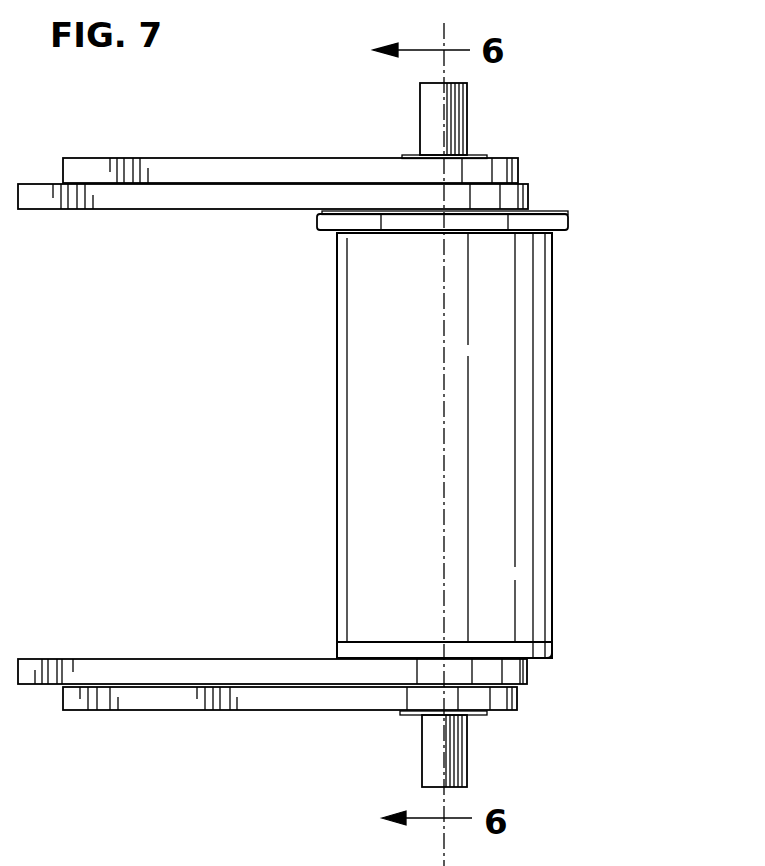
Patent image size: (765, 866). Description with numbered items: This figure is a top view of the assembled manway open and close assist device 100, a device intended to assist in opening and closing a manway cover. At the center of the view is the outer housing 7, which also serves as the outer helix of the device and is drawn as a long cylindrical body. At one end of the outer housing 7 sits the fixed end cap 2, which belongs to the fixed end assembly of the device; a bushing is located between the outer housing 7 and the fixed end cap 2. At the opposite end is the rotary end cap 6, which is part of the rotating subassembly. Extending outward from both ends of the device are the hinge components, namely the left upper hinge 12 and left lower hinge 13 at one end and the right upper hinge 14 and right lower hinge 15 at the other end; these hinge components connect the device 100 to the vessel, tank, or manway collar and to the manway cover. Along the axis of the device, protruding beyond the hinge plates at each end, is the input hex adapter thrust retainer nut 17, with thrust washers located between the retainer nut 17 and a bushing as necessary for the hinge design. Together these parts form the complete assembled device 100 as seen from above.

The manway open and close assist device 100 is at (622, 403).
The fixed end cap 2 is at (560, 221).
The rotary end cap 6 is at (527, 649).
The outer housing/outer helix 7 is at (540, 556).
The left upper hinge 12 is at (93, 668).
The left lower hinge 13 is at (170, 702).
The right upper hinge 14 is at (184, 198).
The right lower hinge 15 is at (230, 170).
The input hex adapter thrust retainer nut 17 is at (458, 128).